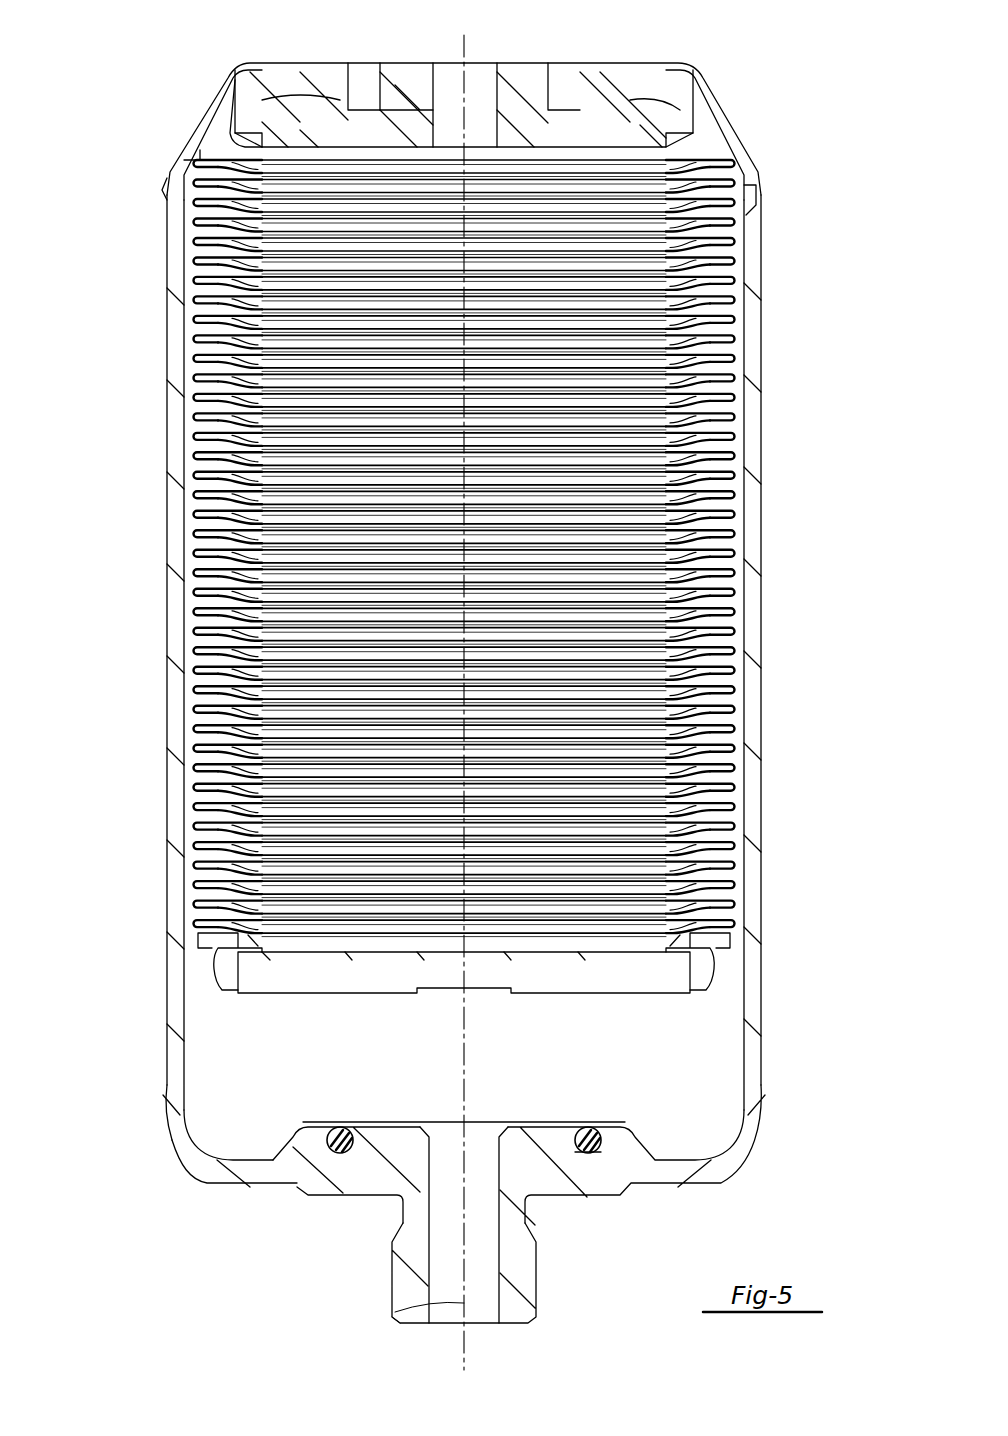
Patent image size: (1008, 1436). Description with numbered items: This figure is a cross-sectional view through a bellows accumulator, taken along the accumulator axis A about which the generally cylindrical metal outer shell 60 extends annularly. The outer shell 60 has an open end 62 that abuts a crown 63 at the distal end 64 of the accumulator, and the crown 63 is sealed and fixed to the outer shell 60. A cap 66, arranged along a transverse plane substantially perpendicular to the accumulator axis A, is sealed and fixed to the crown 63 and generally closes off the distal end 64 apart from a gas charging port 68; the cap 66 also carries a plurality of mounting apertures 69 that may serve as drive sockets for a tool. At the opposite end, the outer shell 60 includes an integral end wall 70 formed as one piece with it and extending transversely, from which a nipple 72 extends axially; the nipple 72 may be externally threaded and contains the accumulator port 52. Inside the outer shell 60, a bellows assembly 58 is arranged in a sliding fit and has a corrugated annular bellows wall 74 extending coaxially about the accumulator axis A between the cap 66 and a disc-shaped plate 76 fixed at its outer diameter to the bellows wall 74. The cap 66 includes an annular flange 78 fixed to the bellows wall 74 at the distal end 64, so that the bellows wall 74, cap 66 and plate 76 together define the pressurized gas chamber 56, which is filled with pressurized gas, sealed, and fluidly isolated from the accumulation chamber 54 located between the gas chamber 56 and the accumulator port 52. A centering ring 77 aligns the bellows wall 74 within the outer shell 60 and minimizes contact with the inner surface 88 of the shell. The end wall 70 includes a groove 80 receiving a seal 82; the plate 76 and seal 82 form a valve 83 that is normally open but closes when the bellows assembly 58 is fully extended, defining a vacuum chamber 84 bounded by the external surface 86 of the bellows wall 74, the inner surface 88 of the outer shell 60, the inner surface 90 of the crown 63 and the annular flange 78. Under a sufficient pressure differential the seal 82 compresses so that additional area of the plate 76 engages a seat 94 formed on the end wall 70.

The accumulator port 52 is at (495, 1262).
The accumulation chamber 54 is at (530, 1050).
The pressurized gas chamber 56 is at (620, 150).
The bellows assembly 58 is at (194, 617).
The outer shell 60 is at (184, 380).
The open end 62 is at (163, 188).
The crown 63 is at (196, 122).
The distal end 64 is at (772, 134).
The cap 66 is at (410, 80).
The gas charging port 68 is at (478, 108).
The mounting apertures 69 is at (362, 85).
The end wall 70 is at (256, 1178).
The nipple 72 is at (407, 1290).
The annular bellows wall 74 is at (742, 950).
The plate 76 is at (333, 960).
The centering ring 77 is at (200, 948).
The annular flange 78 is at (698, 120).
The groove 80 is at (592, 1128).
The seal 82 is at (582, 1152).
The valve 83 is at (515, 1110).
The vacuum chamber 84 is at (236, 152).
The external surface 86 is at (198, 870).
The inner surface 88 is at (190, 1045).
The inner surface 90 is at (750, 192).
The seat 94 is at (200, 1160).
The accumulator axis A is at (385, 1318).